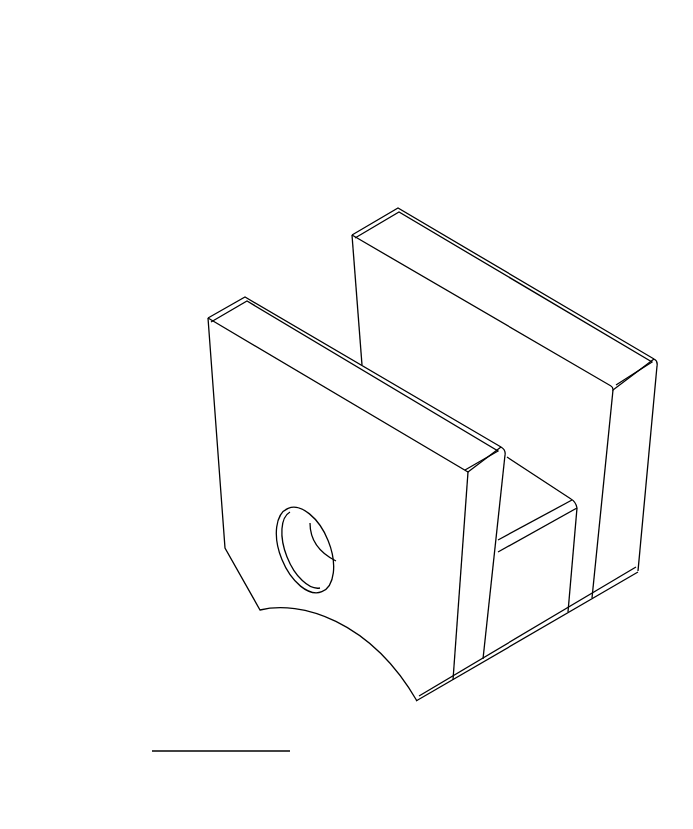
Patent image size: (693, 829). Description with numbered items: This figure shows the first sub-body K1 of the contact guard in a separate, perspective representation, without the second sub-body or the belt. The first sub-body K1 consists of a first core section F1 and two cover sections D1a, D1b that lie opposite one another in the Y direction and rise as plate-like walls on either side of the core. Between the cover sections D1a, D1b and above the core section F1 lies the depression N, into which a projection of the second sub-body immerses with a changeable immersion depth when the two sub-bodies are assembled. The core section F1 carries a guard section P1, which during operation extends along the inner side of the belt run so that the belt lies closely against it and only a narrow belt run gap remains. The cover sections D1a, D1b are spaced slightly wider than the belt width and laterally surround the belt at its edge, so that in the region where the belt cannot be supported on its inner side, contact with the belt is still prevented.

The first sub-body K1 is at (291, 186).
The cover section D1a is at (260, 418).
The cover section D1b is at (530, 303).
The depression N is at (473, 379).
The guard section P1 is at (540, 604).
The first core section F1 is at (553, 557).